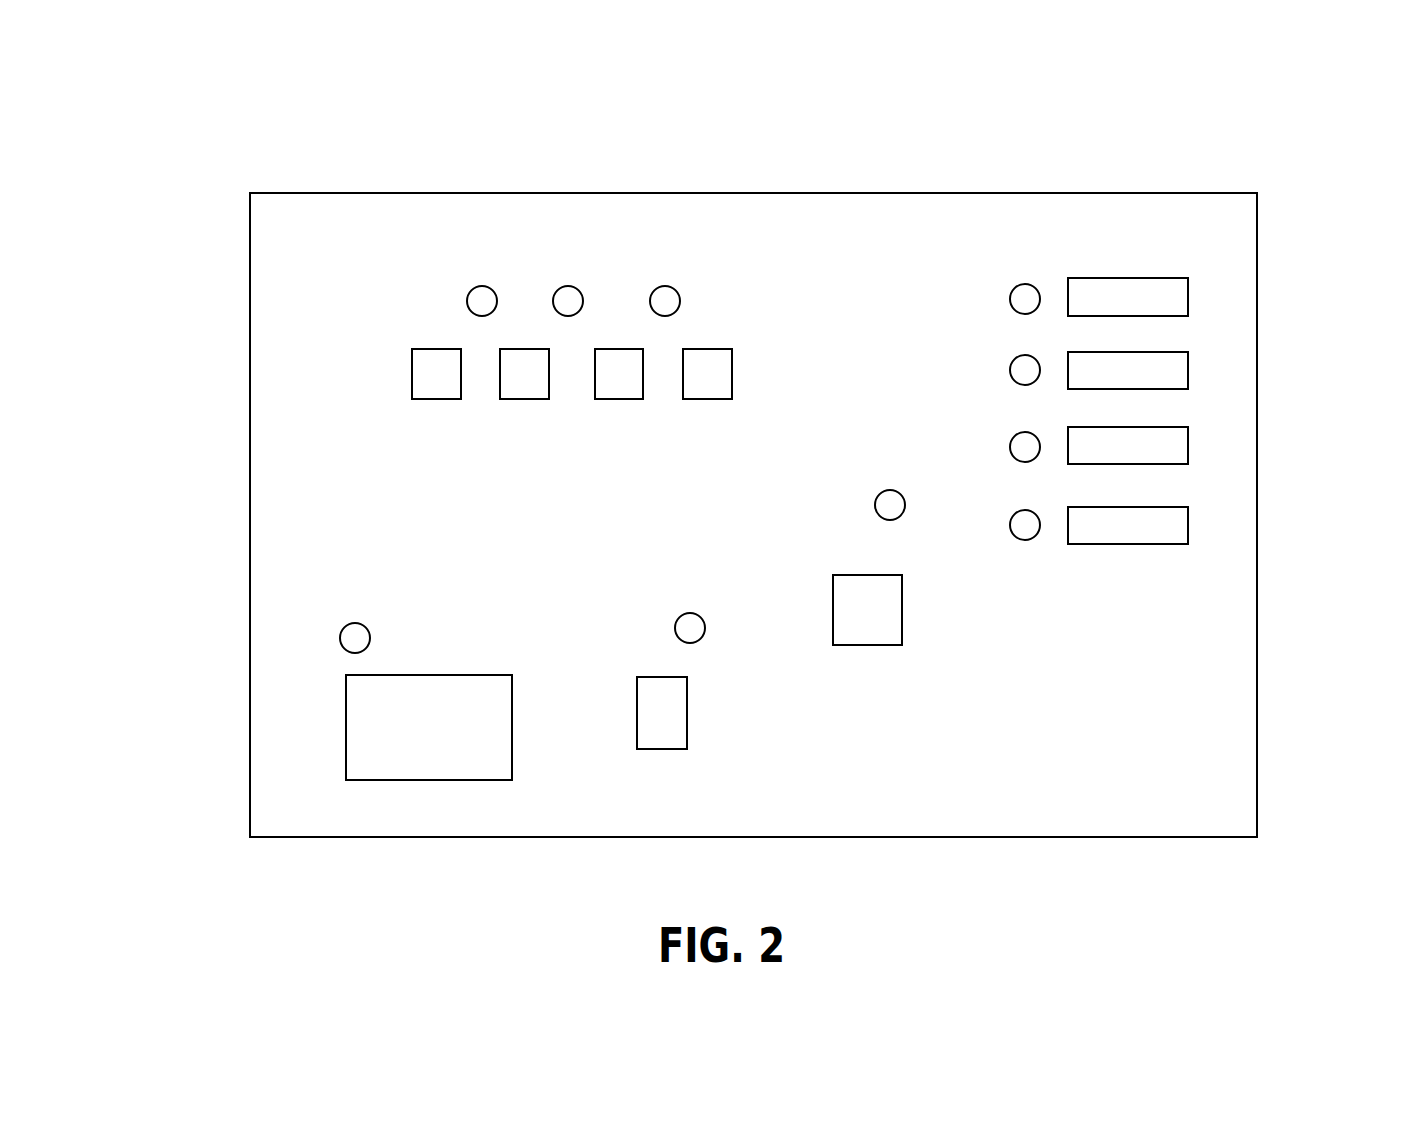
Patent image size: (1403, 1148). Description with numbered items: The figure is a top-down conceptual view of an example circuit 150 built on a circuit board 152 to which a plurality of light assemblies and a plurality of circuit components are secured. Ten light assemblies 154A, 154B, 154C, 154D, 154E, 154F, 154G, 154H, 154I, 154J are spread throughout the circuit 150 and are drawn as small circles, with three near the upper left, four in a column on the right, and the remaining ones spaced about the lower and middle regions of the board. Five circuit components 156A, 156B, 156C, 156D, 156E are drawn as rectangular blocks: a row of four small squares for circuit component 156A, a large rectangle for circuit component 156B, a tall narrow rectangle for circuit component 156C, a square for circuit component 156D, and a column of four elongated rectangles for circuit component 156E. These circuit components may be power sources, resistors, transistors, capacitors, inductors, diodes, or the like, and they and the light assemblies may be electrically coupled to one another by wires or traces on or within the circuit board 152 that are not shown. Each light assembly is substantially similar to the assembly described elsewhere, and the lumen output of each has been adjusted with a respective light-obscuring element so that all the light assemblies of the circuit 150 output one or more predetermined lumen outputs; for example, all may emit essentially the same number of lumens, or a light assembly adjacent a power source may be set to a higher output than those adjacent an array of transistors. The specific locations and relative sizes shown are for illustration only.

The circuit 150 is at (1252, 66).
The circuit board 152 is at (315, 212).
The light assembly 154A is at (482, 300).
The light assembly 154B is at (568, 300).
The light assembly 154C is at (665, 300).
The light assembly 154D is at (355, 638).
The light assembly 154E is at (690, 628).
The light assembly 154F is at (890, 505).
The light assembly 154G is at (1025, 299).
The light assembly 154H is at (1025, 370).
The light assembly 154I is at (1025, 447).
The light assembly 154J is at (1025, 525).
The circuit component 156A is at (366, 380).
The circuit component 156B is at (483, 723).
The circuit component 156C is at (673, 717).
The circuit component 156D is at (883, 623).
The circuit component 156E is at (1124, 606).